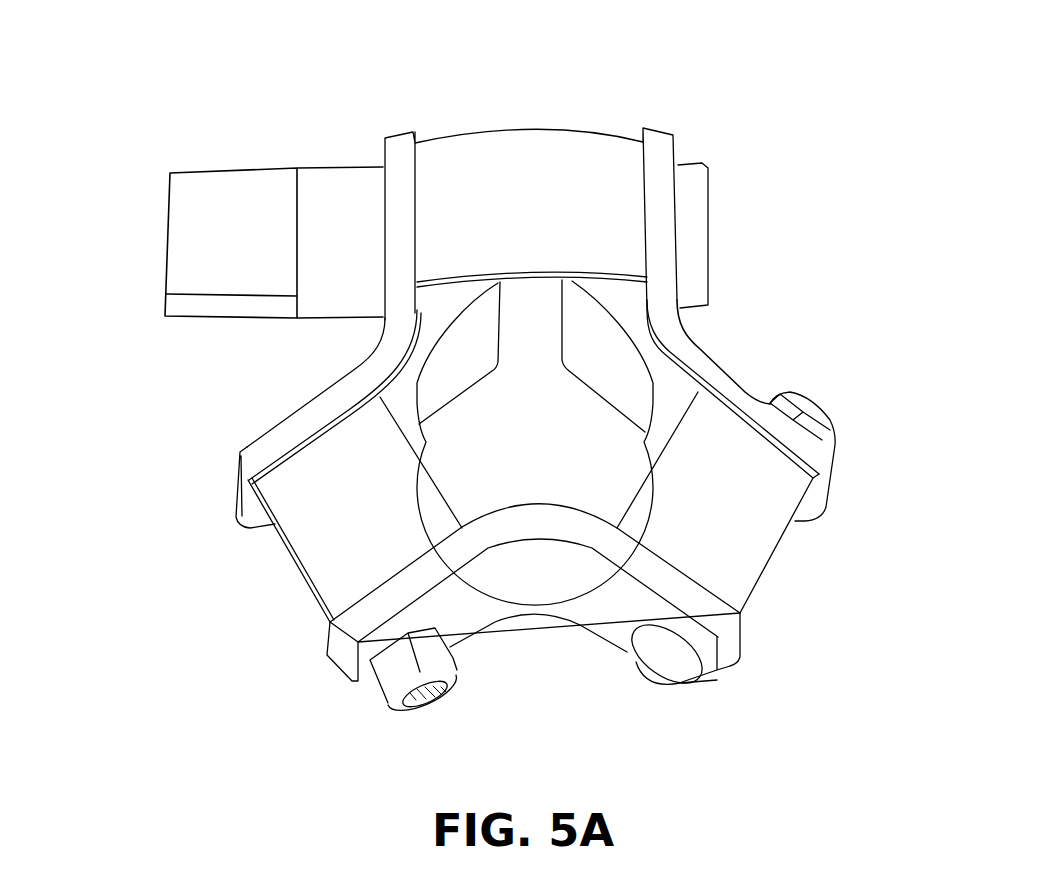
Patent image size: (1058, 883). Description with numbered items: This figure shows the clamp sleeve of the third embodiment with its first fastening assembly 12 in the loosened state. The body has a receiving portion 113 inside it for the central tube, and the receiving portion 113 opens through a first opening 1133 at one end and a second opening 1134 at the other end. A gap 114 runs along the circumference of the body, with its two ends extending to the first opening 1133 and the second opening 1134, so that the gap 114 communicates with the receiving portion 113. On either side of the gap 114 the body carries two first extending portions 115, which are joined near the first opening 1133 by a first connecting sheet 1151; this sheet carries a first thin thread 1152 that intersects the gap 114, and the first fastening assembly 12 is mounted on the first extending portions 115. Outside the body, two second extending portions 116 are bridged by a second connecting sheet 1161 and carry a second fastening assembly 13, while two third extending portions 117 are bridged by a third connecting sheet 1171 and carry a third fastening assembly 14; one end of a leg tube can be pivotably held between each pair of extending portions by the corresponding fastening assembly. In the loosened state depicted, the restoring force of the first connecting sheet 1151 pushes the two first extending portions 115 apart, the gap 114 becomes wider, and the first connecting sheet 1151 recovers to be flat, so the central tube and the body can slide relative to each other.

The first fastening assembly 12 is at (195, 228).
The second fastening assembly 13 is at (818, 413).
The third fastening assembly 14 is at (398, 683).
The receiving portion 113 is at (605, 411).
The gap 114 is at (543, 307).
The first extending portion 115 is at (394, 158).
The second extending portion 116 is at (808, 447).
The third extending portion 117 is at (368, 612).
The first opening 1133 is at (633, 329).
The second opening 1134 is at (457, 383).
The first connecting sheet 1151 is at (613, 197).
The first thin thread 1152 is at (463, 273).
The second connecting sheet 1161 is at (747, 558).
The third connecting sheet 1171 is at (337, 556).